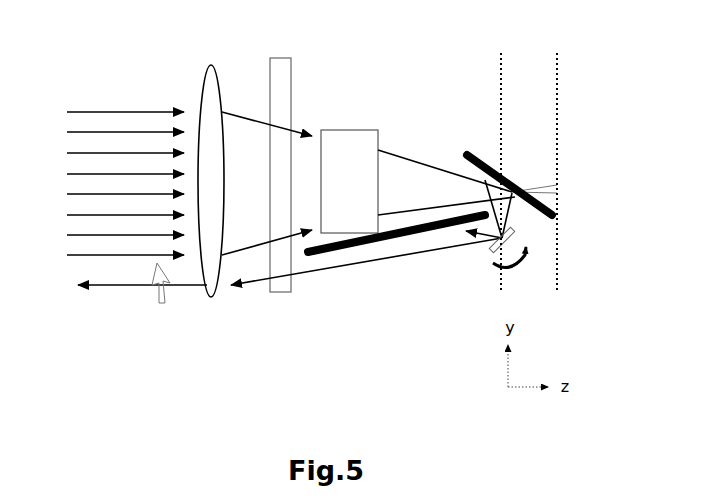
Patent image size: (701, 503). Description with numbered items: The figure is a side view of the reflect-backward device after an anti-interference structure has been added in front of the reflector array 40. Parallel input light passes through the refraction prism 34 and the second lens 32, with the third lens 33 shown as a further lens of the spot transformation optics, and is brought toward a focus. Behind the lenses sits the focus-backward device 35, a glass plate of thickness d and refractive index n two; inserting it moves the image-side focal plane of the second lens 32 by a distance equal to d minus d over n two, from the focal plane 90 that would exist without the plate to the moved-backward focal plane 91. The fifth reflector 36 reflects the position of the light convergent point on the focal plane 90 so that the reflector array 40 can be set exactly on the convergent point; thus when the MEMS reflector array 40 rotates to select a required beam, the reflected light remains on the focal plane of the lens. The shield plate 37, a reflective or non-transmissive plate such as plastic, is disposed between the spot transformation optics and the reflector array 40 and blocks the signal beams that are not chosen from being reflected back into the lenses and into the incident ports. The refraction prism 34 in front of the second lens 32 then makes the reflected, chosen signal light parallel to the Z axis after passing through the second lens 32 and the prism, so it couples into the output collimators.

The second lens 32 is at (210, 297).
The third lens 33 is at (282, 292).
The refraction prism 34 is at (162, 302).
The focus-backward device 35 is at (348, 130).
The fifth reflector 36 is at (485, 163).
The shield plate 37 is at (418, 238).
The reflector array 40 is at (492, 258).
The focal plane 90 is at (493, 75).
The backward focal plane 91 is at (555, 73).